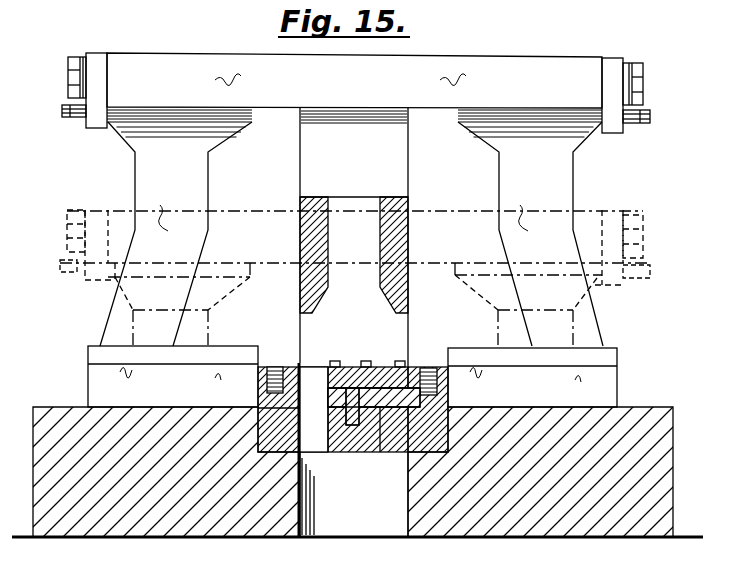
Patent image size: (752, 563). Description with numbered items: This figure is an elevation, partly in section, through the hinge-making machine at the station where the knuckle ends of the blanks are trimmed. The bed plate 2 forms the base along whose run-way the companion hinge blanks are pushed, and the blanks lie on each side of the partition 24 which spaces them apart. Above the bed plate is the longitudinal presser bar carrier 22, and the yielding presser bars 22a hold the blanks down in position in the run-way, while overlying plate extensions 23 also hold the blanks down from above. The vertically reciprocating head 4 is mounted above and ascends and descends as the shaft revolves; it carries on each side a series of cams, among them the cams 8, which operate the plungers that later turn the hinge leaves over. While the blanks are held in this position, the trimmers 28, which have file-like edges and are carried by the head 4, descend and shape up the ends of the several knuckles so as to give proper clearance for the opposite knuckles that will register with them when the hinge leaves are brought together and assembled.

The bed plate 2 is at (644, 414).
The vertically reciprocating head 4 is at (356, 93).
The cam 8 is at (351, 228).
The presser bar carrier 22 is at (353, 366).
The yielding presser bar 22a is at (338, 362).
The overlying plate extension 23 is at (312, 372).
The partition 24 is at (442, 6).
The trimmer 28 is at (300, 284).